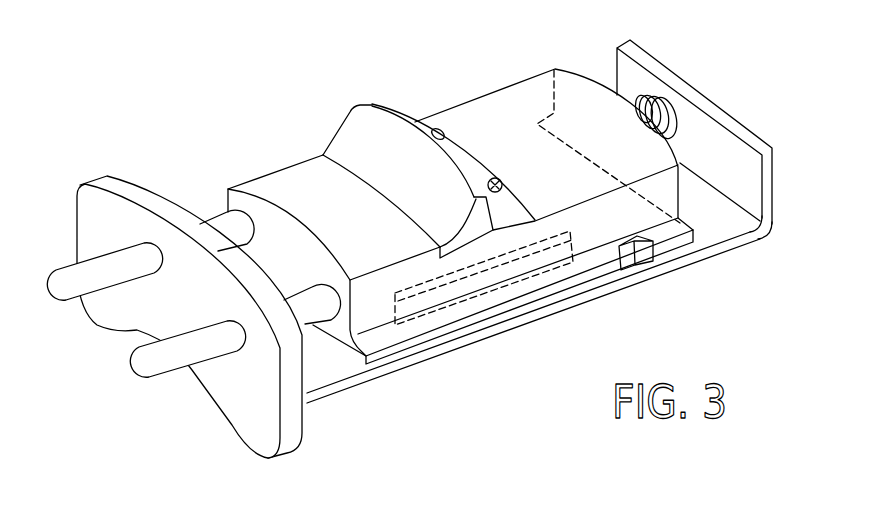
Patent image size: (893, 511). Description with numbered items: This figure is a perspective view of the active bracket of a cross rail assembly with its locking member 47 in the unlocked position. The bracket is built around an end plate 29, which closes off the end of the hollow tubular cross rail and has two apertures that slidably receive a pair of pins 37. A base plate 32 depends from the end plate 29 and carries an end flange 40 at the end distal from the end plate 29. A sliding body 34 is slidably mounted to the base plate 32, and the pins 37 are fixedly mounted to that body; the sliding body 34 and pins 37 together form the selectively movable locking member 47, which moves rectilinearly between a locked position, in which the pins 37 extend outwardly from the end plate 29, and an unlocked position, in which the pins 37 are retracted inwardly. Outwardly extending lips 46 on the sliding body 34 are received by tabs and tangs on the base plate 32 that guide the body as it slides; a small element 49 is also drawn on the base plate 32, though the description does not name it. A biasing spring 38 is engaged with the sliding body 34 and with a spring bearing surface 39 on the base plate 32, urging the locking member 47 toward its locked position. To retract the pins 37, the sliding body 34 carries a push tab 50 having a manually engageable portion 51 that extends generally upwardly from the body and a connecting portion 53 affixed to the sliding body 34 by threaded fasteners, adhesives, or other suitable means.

The end plate 29 is at (303, 423).
The base plate 32 is at (533, 315).
The sliding body 34 is at (375, 105).
The pins 37 is at (65, 303).
The biasing spring 38 is at (679, 104).
The spring bearing surface 39 is at (723, 145).
The end flange 40 is at (777, 180).
The outwardly extending lips 46 is at (460, 305).
The locking member 47 is at (413, 372).
The stop block 49 is at (641, 262).
The push tab 50 is at (353, 127).
The manually engageable portion 51 is at (395, 145).
The connecting portion 53 is at (468, 152).